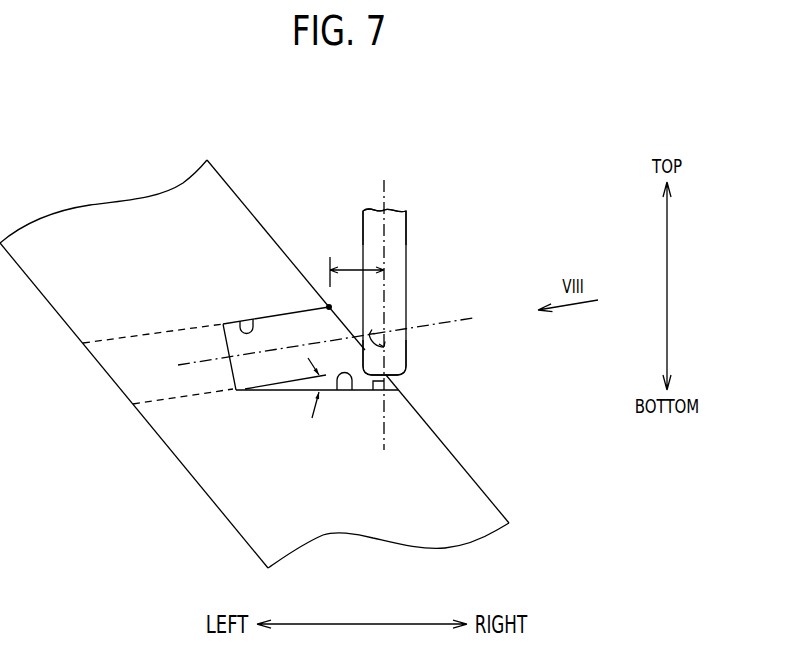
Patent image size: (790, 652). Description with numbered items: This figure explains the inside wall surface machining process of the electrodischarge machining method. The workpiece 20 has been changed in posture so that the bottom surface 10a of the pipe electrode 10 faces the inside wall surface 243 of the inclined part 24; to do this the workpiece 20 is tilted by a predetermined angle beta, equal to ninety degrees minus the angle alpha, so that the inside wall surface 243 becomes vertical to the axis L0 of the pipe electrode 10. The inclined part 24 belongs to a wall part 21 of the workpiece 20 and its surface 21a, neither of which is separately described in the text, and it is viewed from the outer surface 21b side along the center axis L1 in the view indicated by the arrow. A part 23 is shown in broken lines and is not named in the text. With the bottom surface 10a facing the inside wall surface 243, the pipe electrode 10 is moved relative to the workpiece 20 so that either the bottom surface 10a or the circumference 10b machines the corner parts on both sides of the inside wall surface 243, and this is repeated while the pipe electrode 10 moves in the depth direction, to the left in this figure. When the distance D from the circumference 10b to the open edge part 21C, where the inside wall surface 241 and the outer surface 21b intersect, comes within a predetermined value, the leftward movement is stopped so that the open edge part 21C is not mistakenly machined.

The pipe electrode 10 is at (406, 233).
The bottom surface of the pipe electrode 10a is at (365, 390).
The circumference of the pipe electrode 10b is at (363, 223).
The workpiece 20 is at (462, 460).
The plate body 21 is at (210, 200).
The left edge of plate 21a is at (215, 507).
The outer surface 21b is at (492, 495).
The open edge part 21C is at (363, 291).
The hidden opening 23 is at (152, 380).
The inclined part 24 is at (282, 327).
The inside wall surface 241 is at (245, 318).
The inside wall surface 243 is at (340, 390).
The axis L0 is at (383, 301).
The center axis L1 is at (344, 335).
The distance D is at (365, 289).
The angle α alpha is at (285, 390).
The predetermined angle β beta is at (370, 339).